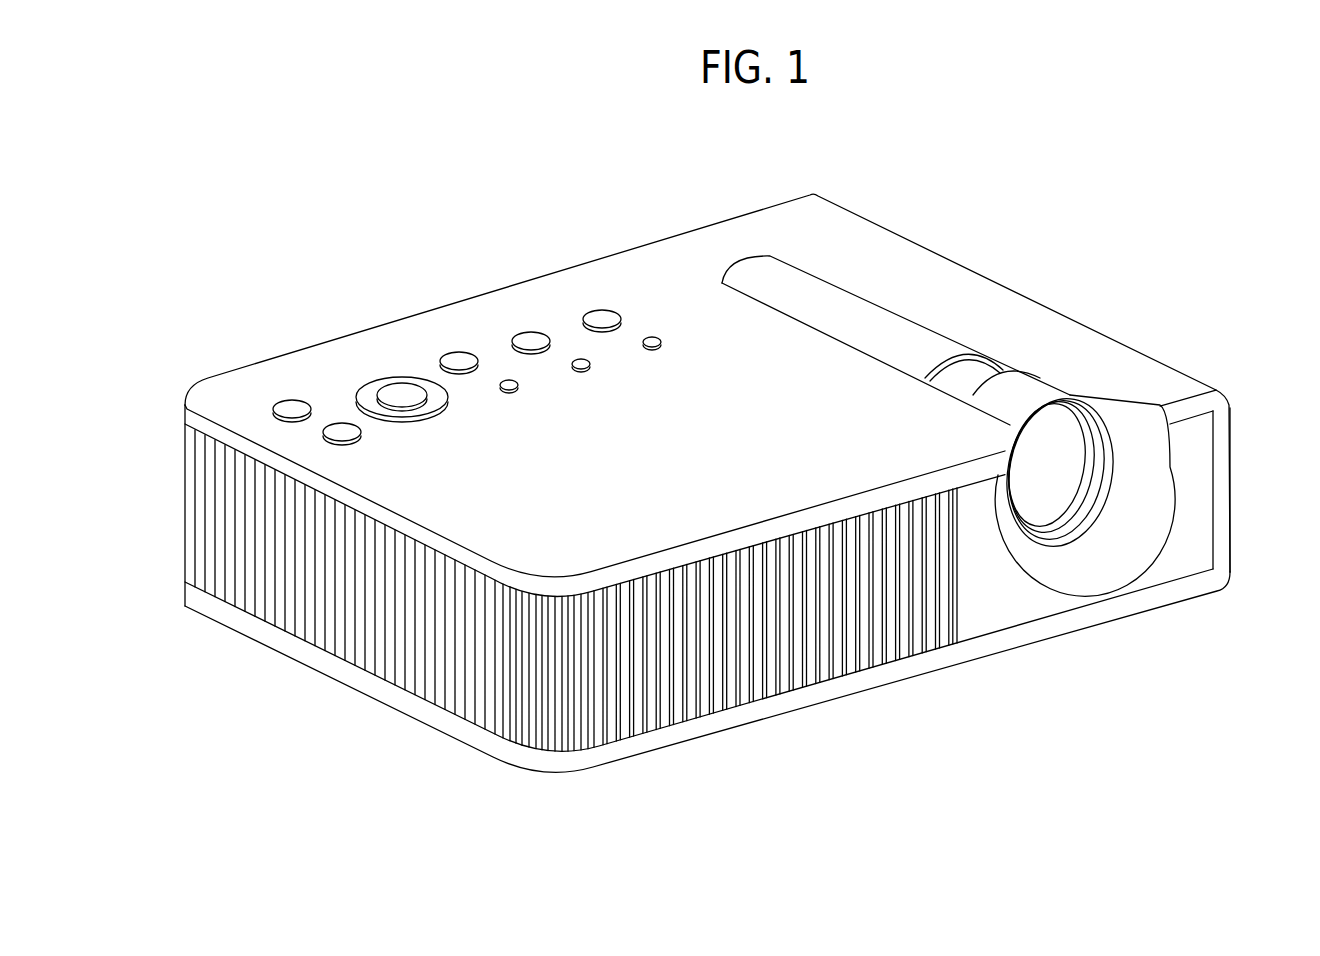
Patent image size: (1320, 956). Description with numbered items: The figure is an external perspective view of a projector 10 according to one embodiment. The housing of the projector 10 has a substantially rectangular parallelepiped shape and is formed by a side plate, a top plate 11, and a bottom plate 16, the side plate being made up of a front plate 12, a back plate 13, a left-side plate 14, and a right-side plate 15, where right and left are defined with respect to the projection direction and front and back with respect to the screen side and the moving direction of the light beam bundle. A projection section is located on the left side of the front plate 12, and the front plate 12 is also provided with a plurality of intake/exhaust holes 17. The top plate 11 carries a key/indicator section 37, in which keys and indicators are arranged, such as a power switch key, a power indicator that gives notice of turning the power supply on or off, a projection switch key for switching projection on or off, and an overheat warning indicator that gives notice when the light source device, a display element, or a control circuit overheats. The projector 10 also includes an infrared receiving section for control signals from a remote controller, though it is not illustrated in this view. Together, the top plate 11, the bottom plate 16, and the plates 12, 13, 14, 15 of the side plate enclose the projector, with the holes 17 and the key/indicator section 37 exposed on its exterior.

The projector 10 is at (408, 257).
The top plate 11 is at (425, 334).
The front plate 12 is at (990, 600).
The back plate 13 is at (185, 478).
The left-side plate 14 is at (1222, 468).
The right-side plate 15 is at (254, 597).
The bottom plate 16 is at (373, 691).
The intake/exhaust holes 17 is at (730, 715).
The key/indicator section 37 is at (400, 393).